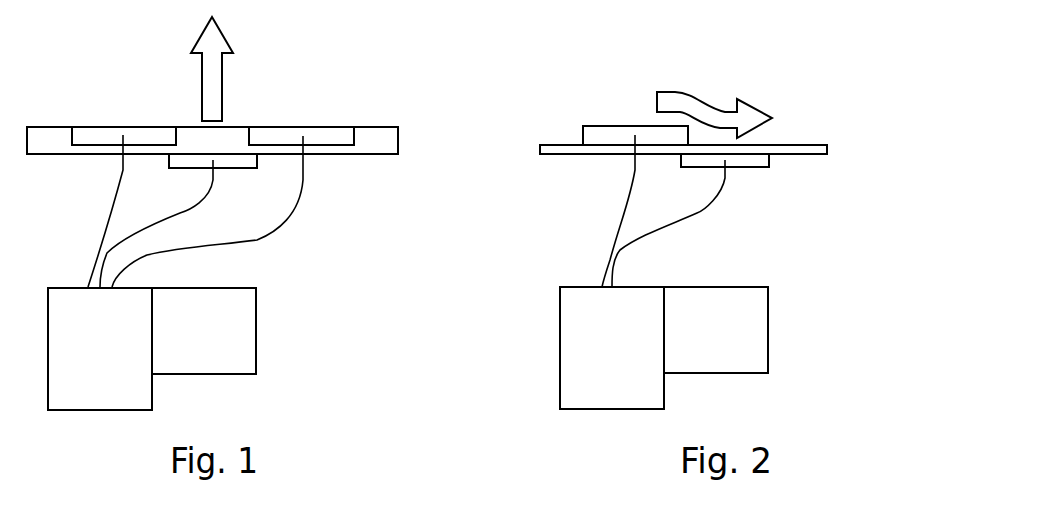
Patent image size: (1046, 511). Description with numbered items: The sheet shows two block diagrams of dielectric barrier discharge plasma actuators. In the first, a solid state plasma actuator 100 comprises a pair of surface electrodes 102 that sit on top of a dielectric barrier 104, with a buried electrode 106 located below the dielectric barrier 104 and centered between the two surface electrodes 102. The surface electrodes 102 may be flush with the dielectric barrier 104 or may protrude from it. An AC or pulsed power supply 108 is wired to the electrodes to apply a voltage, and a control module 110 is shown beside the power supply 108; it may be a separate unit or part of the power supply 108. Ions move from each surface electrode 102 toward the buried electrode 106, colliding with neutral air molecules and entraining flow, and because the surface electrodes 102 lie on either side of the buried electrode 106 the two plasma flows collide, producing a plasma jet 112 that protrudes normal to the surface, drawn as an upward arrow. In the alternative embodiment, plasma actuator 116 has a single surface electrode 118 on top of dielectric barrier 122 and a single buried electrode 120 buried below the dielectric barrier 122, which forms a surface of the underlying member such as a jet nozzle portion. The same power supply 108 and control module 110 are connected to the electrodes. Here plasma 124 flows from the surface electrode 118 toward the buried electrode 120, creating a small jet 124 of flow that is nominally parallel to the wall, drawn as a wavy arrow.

In FIG. 1, the dielectric barrier discharge plasma actuator 100 is at (313, 301).
In FIG. 1, the surface electrode 102 is at (147, 127).
In FIG. 1, the dielectric barrier 104 is at (378, 127).
In FIG. 1, the buried electrode 106 is at (222, 168).
In FIG. 1, the power supply 108 is at (124, 364).
In FIG. 2, the power supply 108 is at (637, 364).
In FIG. 1, the control module 110 is at (228, 347).
In FIG. 2, the control module 110 is at (740, 346).
In FIG. 1, the plasma jet 112 is at (225, 32).
In FIG. 2, the plasma actuator 116 is at (777, 86).
In FIG. 2, the surface electrode 118 is at (622, 126).
In FIG. 2, the buried electrode 120 is at (735, 167).
In FIG. 2, the dielectric barrier 122 is at (797, 145).
In FIG. 2, the plasma jet 124 is at (685, 92).